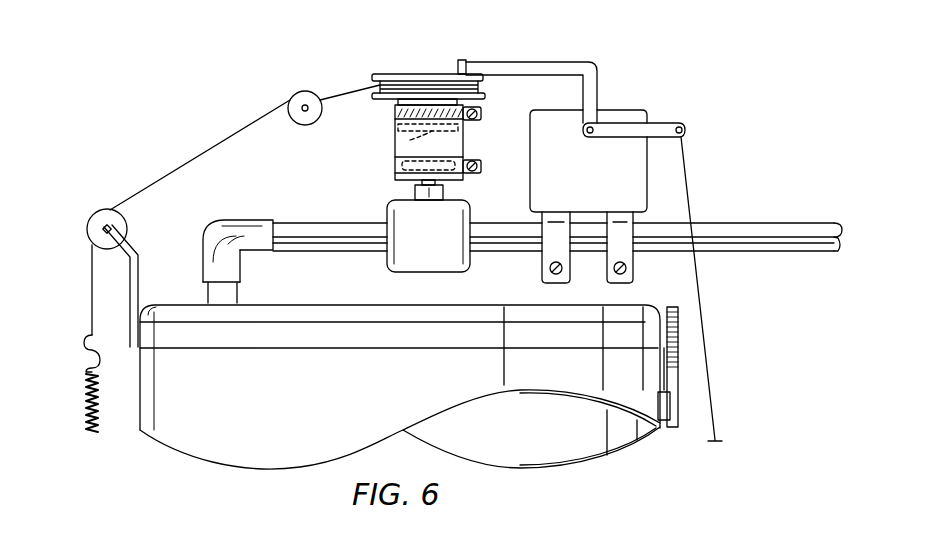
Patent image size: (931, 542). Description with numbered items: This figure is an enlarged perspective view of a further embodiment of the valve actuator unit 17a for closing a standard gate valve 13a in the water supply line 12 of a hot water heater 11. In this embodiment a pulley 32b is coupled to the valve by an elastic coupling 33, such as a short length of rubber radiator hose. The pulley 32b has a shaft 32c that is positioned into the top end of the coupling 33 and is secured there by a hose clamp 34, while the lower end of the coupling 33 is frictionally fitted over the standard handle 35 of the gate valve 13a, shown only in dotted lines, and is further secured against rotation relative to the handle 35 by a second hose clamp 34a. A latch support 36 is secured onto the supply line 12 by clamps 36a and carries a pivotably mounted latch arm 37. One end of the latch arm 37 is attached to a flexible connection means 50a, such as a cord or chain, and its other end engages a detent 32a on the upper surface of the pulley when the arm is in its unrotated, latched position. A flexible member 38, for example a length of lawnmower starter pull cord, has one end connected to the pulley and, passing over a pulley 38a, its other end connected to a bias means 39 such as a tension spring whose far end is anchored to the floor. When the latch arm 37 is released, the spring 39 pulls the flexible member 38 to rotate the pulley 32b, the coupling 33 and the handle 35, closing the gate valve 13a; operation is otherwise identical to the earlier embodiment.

The hot water heater 11 is at (302, 417).
The water supply line 12 is at (770, 223).
The gate valve 13a is at (387, 256).
The valve actuator unit 17a is at (462, 46).
The detent 32a is at (458, 66).
The pulley 32b is at (394, 74).
The shaft 32c is at (412, 140).
The elastic coupling 33 is at (395, 150).
The hose clamp 34 is at (482, 115).
The hose clamp 34a is at (482, 166).
The handle 35 is at (440, 162).
The latch support 36 is at (623, 110).
The clamps 36a is at (542, 263).
The latch arm 37 is at (546, 62).
The flexible member 38 is at (200, 152).
The pulley 38a is at (102, 212).
The bias means 39 is at (84, 420).
The flexible connection means 50a is at (710, 366).